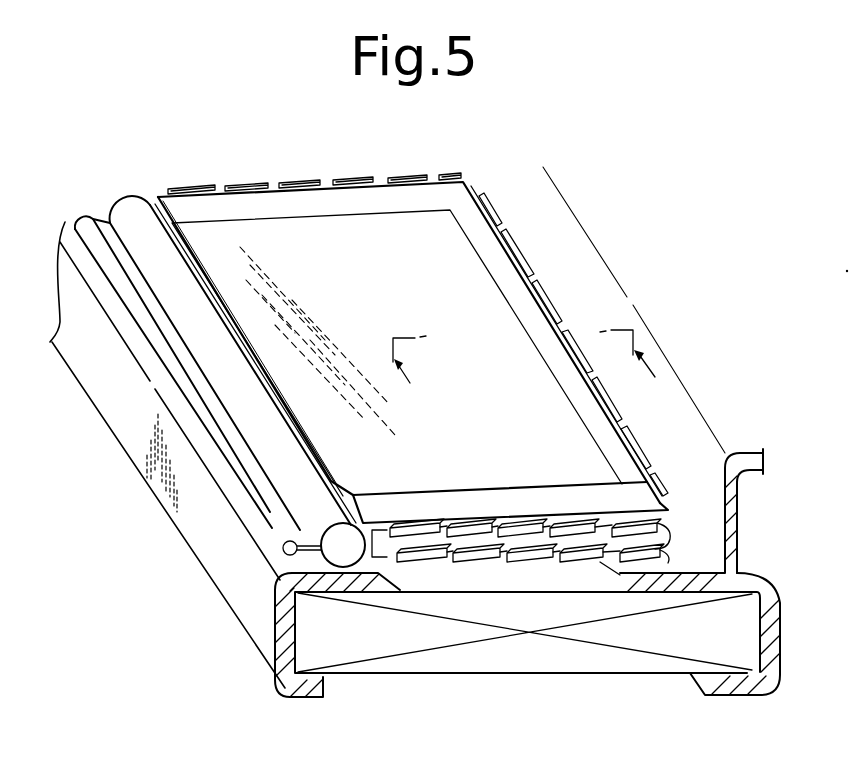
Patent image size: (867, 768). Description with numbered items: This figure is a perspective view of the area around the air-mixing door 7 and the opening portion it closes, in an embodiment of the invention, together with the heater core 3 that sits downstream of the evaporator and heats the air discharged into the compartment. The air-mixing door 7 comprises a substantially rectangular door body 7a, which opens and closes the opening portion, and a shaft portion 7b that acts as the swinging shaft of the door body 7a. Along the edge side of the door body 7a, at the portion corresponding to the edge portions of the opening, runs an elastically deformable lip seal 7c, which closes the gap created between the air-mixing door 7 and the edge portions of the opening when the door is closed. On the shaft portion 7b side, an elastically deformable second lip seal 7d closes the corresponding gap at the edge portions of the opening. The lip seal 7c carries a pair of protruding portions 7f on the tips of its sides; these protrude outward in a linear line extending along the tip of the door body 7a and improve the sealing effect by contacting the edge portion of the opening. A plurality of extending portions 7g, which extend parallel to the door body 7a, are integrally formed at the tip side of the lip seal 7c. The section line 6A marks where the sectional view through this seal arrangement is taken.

The heater core 3 is at (589, 654).
The section line 6A- 6A is at (559, 310).
The air-mixing door 7 is at (204, 184).
The door body 7a is at (356, 250).
The shaft portion 7b is at (132, 208).
The lip seal 7c is at (452, 182).
The second lip seal 7d is at (270, 518).
The protruding portion 7f is at (619, 418).
The extending portion 7g is at (490, 213).